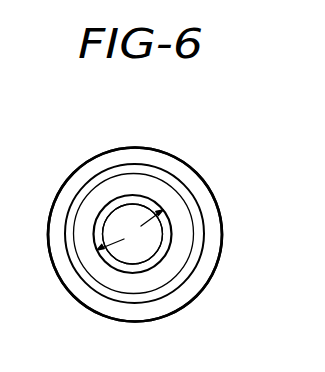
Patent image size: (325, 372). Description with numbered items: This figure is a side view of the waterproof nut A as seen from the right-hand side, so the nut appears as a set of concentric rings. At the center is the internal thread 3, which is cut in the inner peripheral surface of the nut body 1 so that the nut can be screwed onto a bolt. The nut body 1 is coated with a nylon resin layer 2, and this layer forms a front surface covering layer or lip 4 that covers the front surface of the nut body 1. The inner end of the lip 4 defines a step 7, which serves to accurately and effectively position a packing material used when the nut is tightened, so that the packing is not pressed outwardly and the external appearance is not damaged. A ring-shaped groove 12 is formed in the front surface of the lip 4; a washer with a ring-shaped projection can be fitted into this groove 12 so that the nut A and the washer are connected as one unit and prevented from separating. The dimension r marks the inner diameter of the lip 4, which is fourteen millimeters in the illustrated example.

The waterproof nut A is at (157, 145).
The nut body 1 is at (160, 260).
The nylon resin layer 2 is at (183, 160).
The internal thread 3 is at (112, 224).
The lip 4 is at (135, 287).
The step 7 is at (168, 243).
The ring-shaped groove 12 is at (196, 212).
The inner diameter of the lip r is at (130, 230).